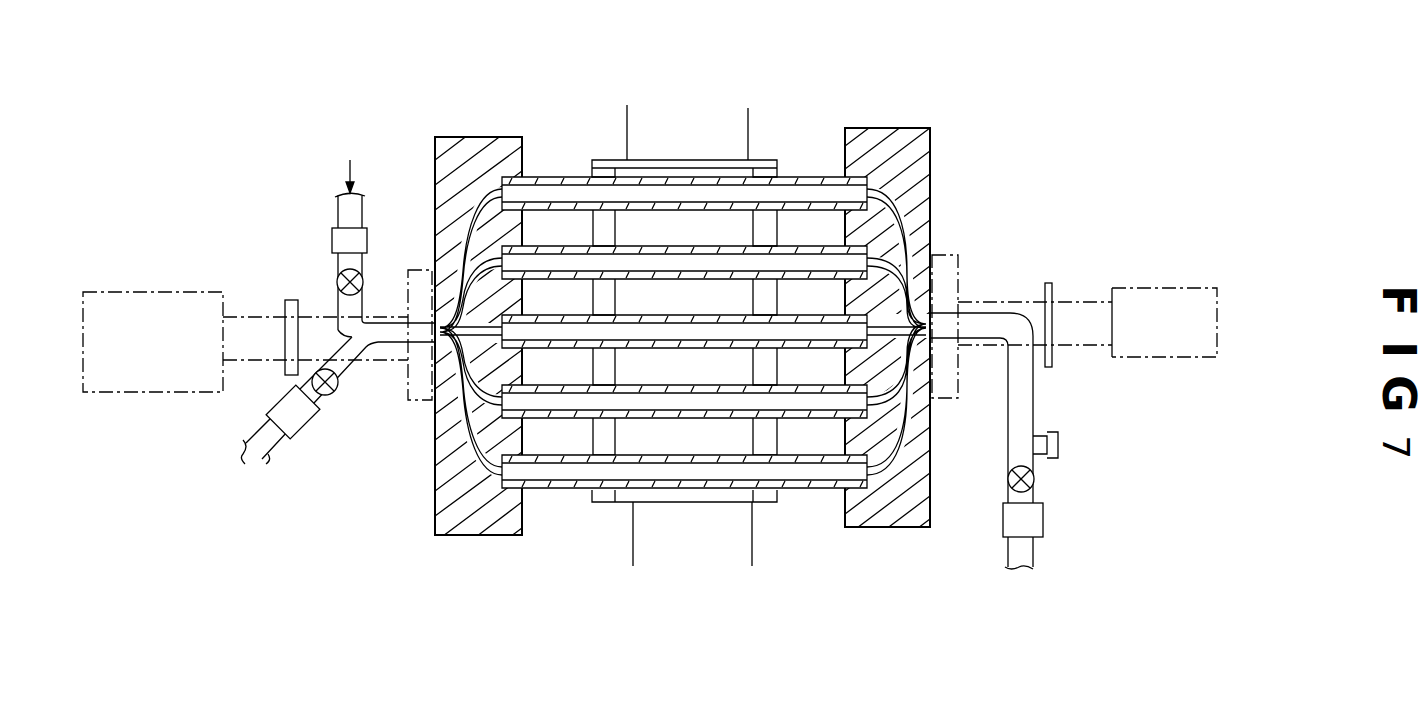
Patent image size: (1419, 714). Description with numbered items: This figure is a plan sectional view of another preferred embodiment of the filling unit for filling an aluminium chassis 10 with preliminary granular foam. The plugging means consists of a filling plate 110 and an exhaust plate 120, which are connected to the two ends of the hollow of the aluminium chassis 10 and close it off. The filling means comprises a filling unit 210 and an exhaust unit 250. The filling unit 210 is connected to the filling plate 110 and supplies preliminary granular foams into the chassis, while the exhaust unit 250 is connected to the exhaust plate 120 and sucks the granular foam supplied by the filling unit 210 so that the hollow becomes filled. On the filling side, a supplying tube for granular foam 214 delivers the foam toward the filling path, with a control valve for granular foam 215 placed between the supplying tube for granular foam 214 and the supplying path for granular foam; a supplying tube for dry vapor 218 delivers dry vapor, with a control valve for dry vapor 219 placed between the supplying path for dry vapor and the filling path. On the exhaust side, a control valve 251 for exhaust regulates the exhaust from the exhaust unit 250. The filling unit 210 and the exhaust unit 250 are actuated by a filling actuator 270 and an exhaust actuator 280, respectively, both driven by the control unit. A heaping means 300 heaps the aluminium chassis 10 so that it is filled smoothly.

The aluminium chassis 10 is at (796, 494).
The filling plate 110 is at (471, 124).
The exhaust plate 120 is at (882, 122).
The filling unit 210 is at (300, 264).
The supplying tube for granular foam 214 is at (332, 215).
The control valve for granular foam 215 is at (362, 284).
The supplying tube for dry vapor 218 is at (270, 468).
The control valve for dry vapor 219 is at (335, 392).
The exhaust unit 250 is at (980, 280).
The control valve for exhaust 251 is at (1034, 481).
The filling actuator 270 is at (142, 303).
The exhaust actuator 280 is at (1165, 345).
The heaping means 300 is at (684, 363).